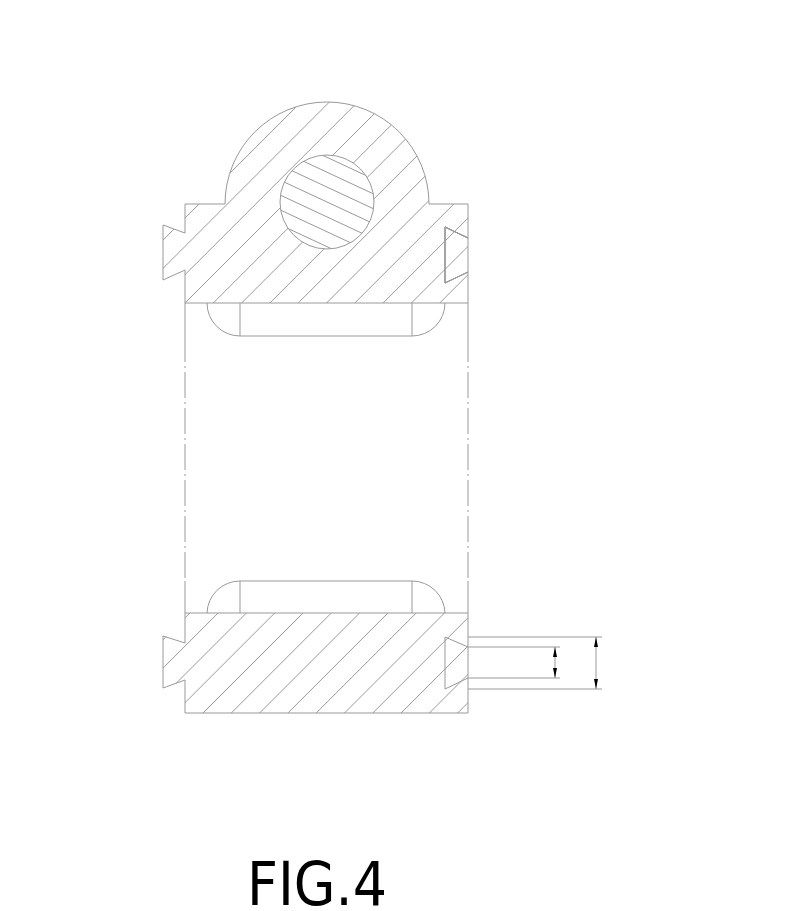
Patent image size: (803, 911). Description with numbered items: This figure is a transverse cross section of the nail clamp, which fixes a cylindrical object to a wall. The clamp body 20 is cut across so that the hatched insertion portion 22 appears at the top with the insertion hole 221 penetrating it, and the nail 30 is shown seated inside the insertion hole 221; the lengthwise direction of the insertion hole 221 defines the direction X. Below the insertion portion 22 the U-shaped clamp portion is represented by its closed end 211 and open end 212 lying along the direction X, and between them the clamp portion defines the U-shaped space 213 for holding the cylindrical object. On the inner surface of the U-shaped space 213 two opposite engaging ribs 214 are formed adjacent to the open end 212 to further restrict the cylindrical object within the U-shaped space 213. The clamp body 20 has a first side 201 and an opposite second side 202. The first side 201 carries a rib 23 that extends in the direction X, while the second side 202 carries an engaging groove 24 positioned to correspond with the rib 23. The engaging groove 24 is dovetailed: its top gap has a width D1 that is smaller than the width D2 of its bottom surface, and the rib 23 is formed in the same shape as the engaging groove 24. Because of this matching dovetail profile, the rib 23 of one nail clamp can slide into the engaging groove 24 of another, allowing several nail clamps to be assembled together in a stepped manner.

The clamp body 20 is at (185, 428).
The insertion portion 22 is at (335, 132).
The insertion hole 221 is at (343, 158).
The nail 30 is at (300, 170).
The closed end 211 is at (453, 242).
The open end 212 is at (456, 255).
The U-shaped space 213 is at (468, 248).
The engaging ribs 214 is at (445, 253).
The rib 23 is at (175, 258).
The engaging groove 24 is at (527, 238).
The second side 202 is at (468, 287).
The first side 201 is at (185, 703).
The width of the top gap D1 is at (560, 663).
The width of the bottom surface D2 is at (598, 662).